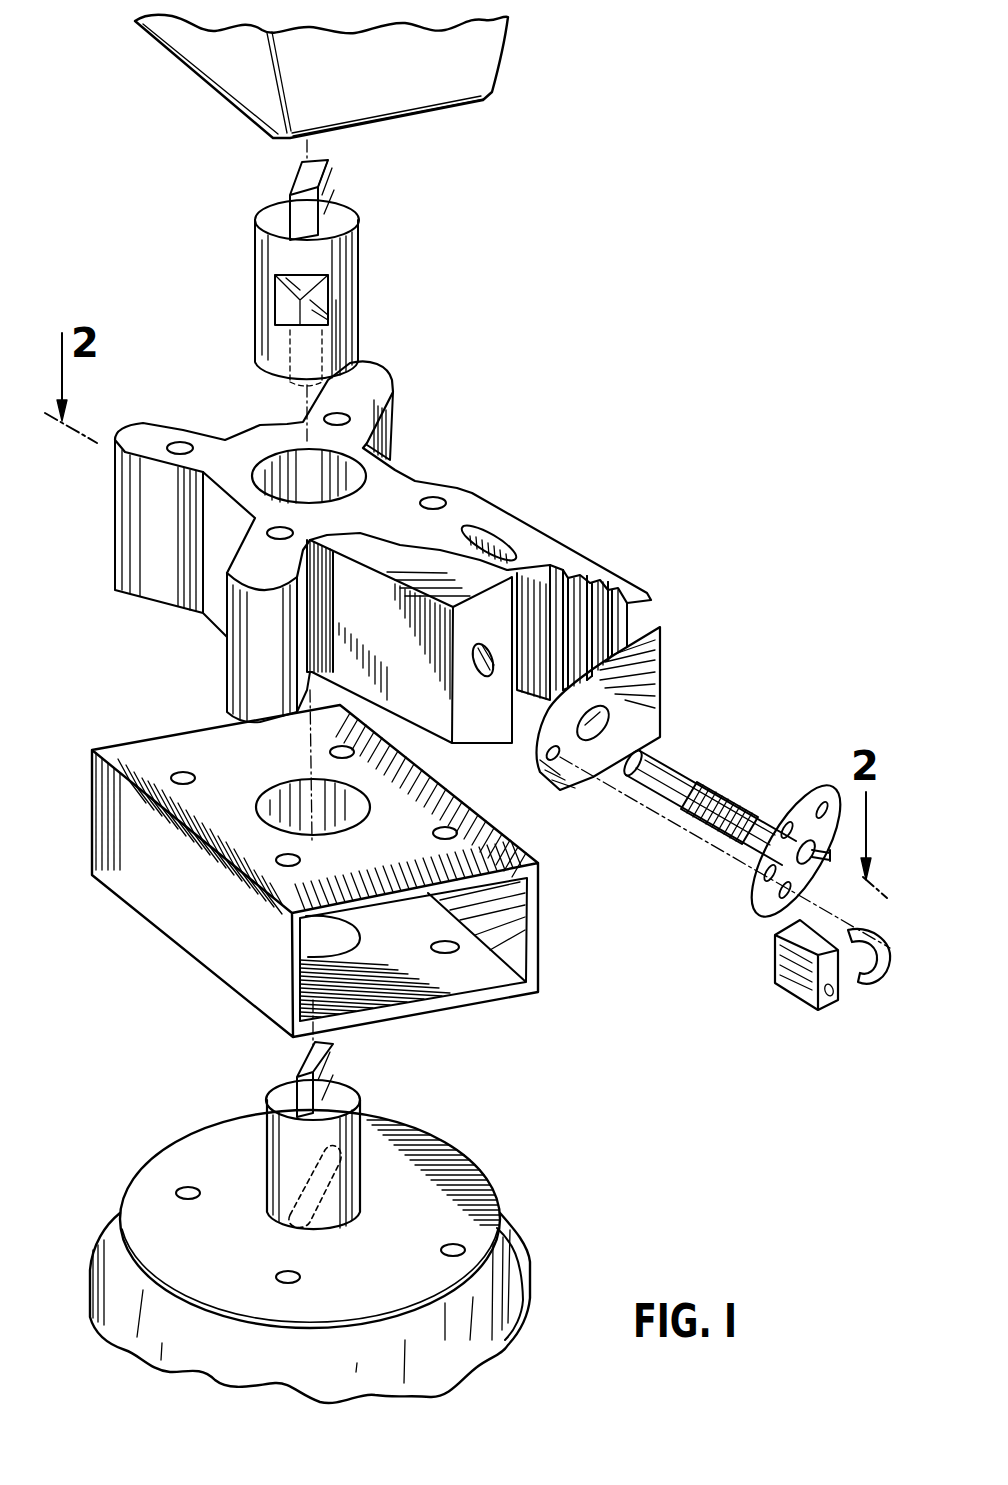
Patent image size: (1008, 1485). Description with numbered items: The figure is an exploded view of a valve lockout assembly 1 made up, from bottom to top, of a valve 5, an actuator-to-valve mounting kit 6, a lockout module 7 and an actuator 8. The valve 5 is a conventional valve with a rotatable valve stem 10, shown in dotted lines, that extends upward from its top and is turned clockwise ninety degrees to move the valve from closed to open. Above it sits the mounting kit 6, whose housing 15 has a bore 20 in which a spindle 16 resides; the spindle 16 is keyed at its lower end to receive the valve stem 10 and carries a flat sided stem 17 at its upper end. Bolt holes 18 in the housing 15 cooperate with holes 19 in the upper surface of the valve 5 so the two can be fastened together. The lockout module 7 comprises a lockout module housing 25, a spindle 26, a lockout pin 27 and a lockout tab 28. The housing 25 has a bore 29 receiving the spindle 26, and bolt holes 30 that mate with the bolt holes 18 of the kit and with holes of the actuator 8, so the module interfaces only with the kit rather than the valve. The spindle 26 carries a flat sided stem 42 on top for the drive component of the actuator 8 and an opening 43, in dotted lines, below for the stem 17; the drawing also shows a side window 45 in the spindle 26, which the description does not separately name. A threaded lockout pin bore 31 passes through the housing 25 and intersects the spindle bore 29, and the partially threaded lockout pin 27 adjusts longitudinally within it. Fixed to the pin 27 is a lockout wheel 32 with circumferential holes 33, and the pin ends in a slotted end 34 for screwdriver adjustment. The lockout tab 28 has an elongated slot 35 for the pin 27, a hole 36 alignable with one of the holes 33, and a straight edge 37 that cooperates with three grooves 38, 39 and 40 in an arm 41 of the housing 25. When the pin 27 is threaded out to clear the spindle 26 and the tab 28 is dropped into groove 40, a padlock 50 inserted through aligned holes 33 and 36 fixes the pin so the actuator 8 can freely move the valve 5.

The valve lockout assembly 1 is at (645, 1085).
The valve 5 is at (528, 1270).
The actuator-to-valve mounting kit 6 is at (348, 871).
The lockout module 7 is at (412, 566).
The actuator 8 is at (478, 80).
The valve stem 10 is at (262, 1210).
The housing 15 is at (540, 930).
The spindle 16 is at (277, 1147).
The flat sided stem 17 is at (297, 1060).
The bolt holes 18 is at (330, 753).
The holes 19 is at (180, 1197).
The bore 20 is at (348, 778).
The lockout module housing 25 is at (387, 503).
The spindle 26 is at (309, 293).
The lockout pin 27 is at (682, 760).
The lockout tab 28 is at (618, 729).
The bore 29 is at (287, 426).
The bolt holes 30 is at (180, 442).
The threaded lockout pin bore 31 is at (484, 677).
The lockout wheel 32 is at (784, 851).
The circumferential holes 33 is at (778, 903).
The slotted end 34 is at (826, 868).
The elongated hole or slot 35 is at (615, 712).
The hole 36 is at (545, 768).
The straight edge 37 is at (655, 657).
The groove 38 is at (566, 567).
The groove 39 is at (588, 578).
The groove 40 is at (612, 595).
The appendage or arm 41 is at (550, 545).
The flat sided stem 42 is at (340, 195).
The aperture or opening 43 is at (290, 357).
The window 45 is at (328, 281).
The padlock 50 is at (790, 992).